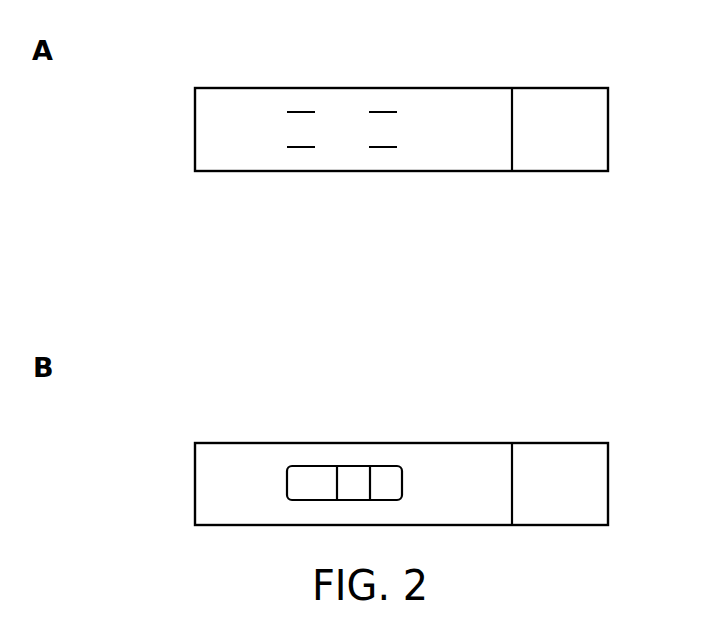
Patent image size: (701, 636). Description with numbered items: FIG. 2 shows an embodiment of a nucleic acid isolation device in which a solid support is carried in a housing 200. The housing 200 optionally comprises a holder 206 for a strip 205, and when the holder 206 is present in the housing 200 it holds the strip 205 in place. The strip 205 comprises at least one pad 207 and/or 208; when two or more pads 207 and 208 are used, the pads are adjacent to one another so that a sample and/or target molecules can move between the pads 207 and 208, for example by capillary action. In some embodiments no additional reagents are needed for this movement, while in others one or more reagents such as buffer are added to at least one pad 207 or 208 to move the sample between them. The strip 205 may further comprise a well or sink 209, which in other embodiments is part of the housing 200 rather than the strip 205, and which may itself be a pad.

The housing 200 is at (195, 131).
The strip 205 is at (290, 466).
The holder 206 is at (378, 117).
The pad 207 is at (309, 477).
The pad 208 is at (347, 476).
The well or sink 209 is at (387, 477).